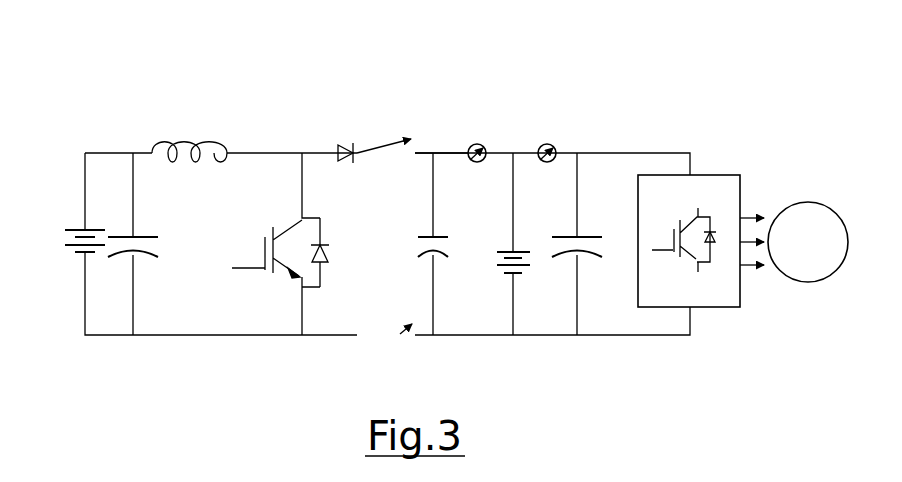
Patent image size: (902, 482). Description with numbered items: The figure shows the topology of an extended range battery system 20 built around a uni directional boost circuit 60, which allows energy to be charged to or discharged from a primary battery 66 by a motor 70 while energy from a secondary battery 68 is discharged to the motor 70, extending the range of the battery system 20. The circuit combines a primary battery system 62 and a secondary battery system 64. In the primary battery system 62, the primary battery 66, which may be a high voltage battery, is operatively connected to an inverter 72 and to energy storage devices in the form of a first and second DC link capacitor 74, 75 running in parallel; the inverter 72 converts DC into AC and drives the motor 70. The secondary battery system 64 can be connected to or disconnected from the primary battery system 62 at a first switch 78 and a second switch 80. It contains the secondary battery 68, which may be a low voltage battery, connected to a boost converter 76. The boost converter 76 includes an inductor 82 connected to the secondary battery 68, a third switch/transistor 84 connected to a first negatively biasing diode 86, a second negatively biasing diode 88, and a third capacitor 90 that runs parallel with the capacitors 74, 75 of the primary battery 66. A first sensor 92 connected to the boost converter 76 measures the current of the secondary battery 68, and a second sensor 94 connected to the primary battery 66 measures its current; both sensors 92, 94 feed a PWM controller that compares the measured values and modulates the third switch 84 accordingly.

The extended range battery system 20 is at (619, 43).
The uni directional boost circuit 60 is at (451, 83).
The primary battery system 62 is at (689, 115).
The secondary battery system 64 is at (260, 136).
The primary battery 66 is at (527, 250).
The secondary battery 68 is at (72, 229).
The motor 70 is at (808, 202).
The inverter 72 is at (718, 307).
The DC link capacitor 74 is at (590, 262).
The DC link capacitor 75 is at (440, 258).
The boost converter 76 is at (161, 116).
The first switch 78 is at (400, 146).
The second switch 80 is at (400, 334).
The inductor 82 is at (223, 140).
The third switch/transistor 84 is at (252, 273).
The first negatively biasing diode 86 is at (323, 288).
The second negatively biasing diode 88 is at (315, 152).
The third capacitor 90 is at (143, 257).
The first sensor 92 is at (467, 145).
The second sensor 94 is at (538, 145).